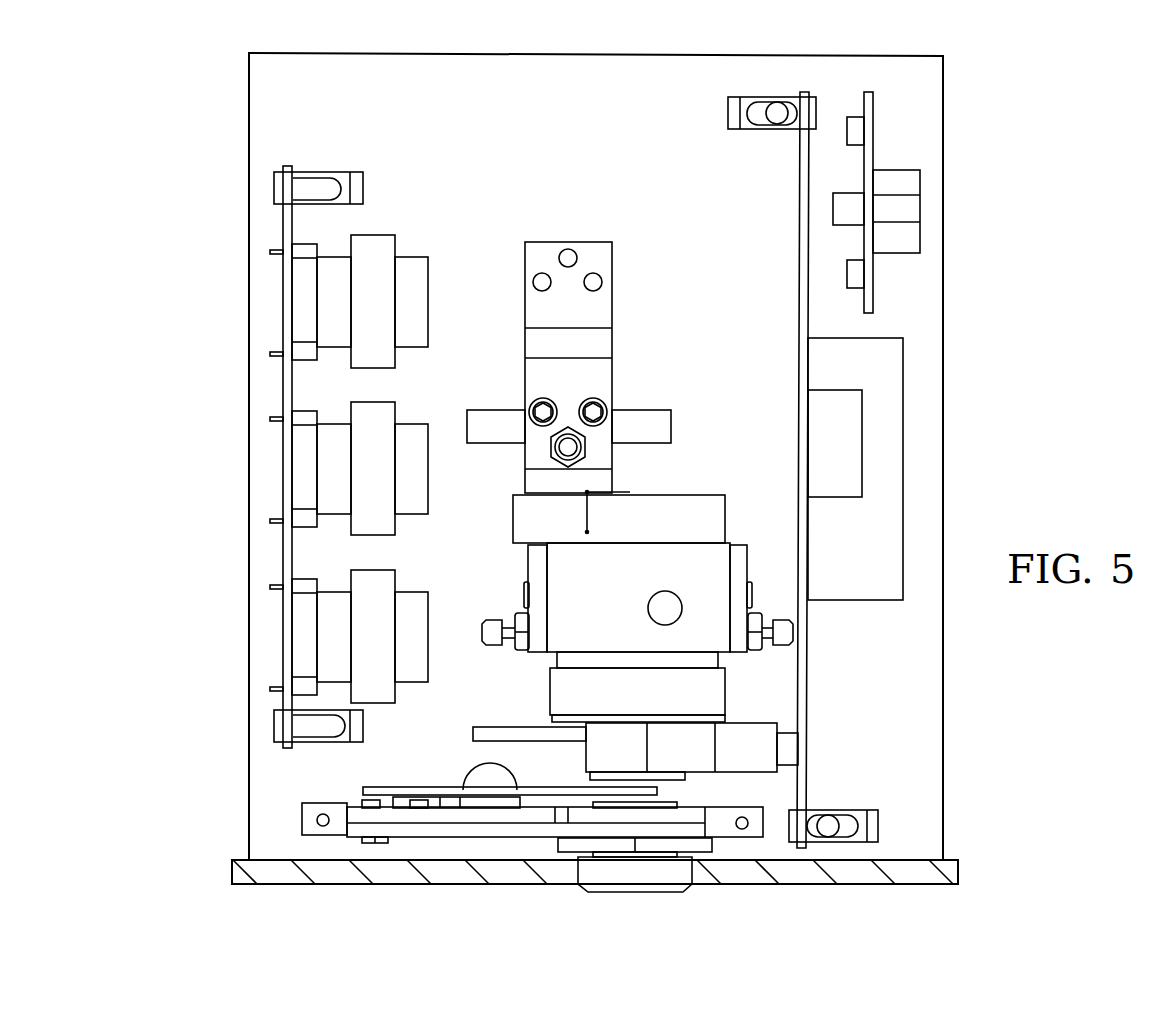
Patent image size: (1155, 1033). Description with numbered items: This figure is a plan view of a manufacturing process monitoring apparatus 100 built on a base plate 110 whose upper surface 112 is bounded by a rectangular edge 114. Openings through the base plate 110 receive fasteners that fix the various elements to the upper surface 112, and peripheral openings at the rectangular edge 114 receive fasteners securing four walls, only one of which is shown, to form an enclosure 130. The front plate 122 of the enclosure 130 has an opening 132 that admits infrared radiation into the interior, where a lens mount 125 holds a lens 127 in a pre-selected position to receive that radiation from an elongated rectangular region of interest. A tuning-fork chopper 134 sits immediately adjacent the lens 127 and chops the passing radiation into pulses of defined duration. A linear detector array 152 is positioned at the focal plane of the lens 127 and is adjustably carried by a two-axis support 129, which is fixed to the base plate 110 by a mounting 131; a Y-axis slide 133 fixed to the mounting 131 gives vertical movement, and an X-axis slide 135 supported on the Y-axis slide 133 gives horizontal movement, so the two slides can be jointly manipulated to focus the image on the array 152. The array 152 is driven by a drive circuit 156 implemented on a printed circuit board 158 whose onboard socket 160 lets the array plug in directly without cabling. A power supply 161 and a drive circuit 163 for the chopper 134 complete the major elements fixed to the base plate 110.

The manufacturing process monitoring apparatus 100 is at (962, 490).
The base plate 110 is at (907, 718).
The upper surface 112 is at (670, 180).
The rectangular edge 114 is at (248, 700).
The front plate 122 is at (298, 878).
The lens mount 125 is at (627, 873).
The lens 127 is at (692, 790).
The two-axis support 129 is at (690, 495).
The enclosure 130 is at (232, 441).
The mounting 131 is at (590, 316).
The opening 132 is at (562, 898).
The Y-axis slide 133 is at (571, 389).
The tuning-fork chopper 134 is at (448, 787).
The X-axis slide 135 is at (562, 598).
The linear detector array 152 is at (697, 738).
The drive circuit 156 is at (825, 659).
The printed circuit board 158 is at (800, 297).
The onboard socket 160 is at (792, 745).
The power supply 161 is at (380, 420).
The drive circuit 163 is at (905, 187).